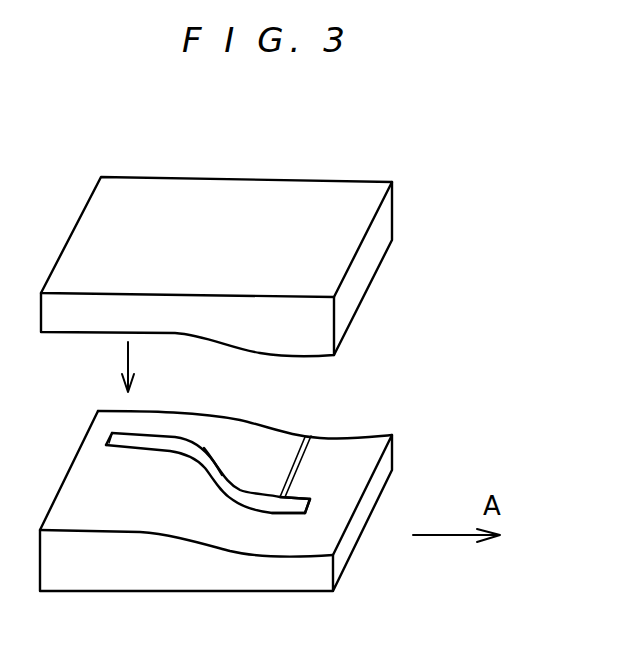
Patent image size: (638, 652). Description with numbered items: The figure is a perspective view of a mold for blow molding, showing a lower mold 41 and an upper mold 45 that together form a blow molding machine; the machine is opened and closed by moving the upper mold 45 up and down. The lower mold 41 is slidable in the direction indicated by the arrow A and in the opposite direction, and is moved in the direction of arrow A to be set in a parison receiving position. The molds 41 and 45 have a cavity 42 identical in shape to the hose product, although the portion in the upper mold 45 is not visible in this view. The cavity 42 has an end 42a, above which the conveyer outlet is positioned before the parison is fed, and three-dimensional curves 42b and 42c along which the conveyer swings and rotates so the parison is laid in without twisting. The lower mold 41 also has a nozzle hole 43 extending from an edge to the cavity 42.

The upper mold 45 is at (368, 258).
The lower mold 41 is at (192, 573).
The cavity 42 is at (162, 442).
The end of the cavity 42a is at (128, 440).
The three-dimensional curve of the cavity 42b is at (207, 460).
The three-dimensional curve of the cavity 42c is at (243, 495).
The nozzle hole 43 is at (296, 447).